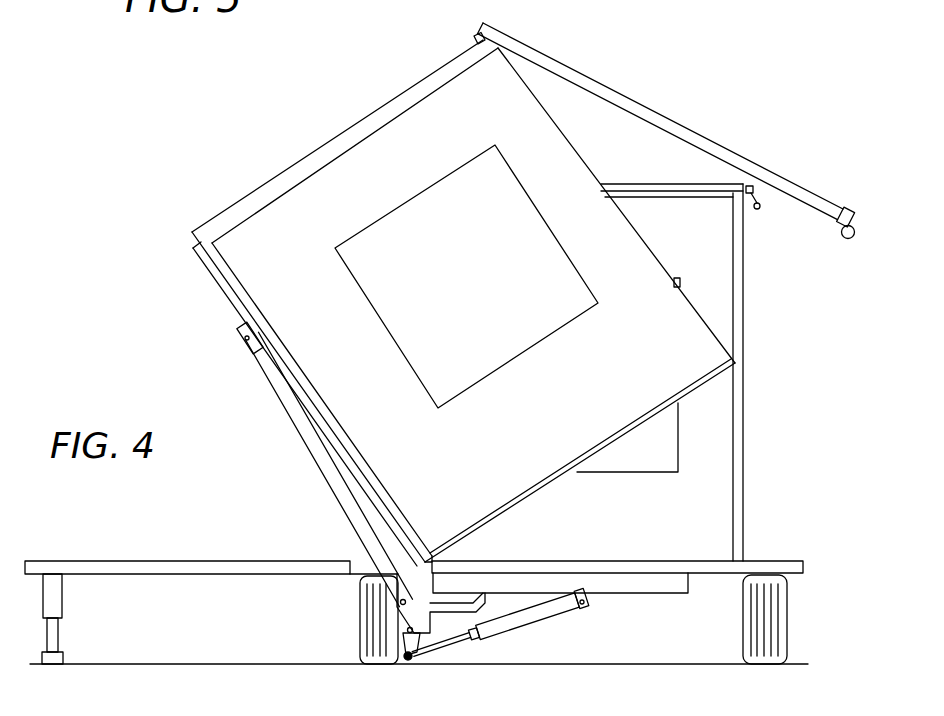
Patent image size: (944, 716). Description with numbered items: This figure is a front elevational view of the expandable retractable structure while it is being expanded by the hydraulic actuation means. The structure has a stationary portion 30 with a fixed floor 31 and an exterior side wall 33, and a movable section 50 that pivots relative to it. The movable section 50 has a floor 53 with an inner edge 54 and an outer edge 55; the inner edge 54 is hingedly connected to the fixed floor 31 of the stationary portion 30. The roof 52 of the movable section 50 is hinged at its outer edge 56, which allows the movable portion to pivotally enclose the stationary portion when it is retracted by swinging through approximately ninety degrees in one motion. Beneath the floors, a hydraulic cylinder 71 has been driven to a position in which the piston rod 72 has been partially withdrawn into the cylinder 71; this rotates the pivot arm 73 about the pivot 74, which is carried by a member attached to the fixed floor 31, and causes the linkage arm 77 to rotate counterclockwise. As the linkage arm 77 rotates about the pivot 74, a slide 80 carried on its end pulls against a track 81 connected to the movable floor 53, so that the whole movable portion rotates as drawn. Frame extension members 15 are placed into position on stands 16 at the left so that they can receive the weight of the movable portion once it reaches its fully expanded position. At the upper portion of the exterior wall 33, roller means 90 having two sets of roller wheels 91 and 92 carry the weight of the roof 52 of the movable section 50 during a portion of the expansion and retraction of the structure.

The frame extension member 15 is at (173, 562).
The stand 16 is at (58, 587).
The stationary portion 30 is at (692, 372).
The fixed floor 31 is at (614, 561).
The exterior side wall 33 is at (743, 290).
The movable section 50 is at (666, 131).
The roof 52 is at (680, 128).
The movable floor 53 is at (333, 415).
The inner edge 54 is at (423, 565).
The outer edge 55 is at (218, 217).
The outer edge 56 is at (478, 33).
The hydraulic cylinder 71 is at (533, 618).
The piston rod 72 is at (443, 647).
The pivot arm 73 is at (403, 650).
The pivot point 74 is at (398, 602).
The linkage arm 77 is at (323, 490).
The slide 80 is at (245, 334).
The track 81 is at (208, 265).
The roller means 90 is at (798, 189).
The roller wheel 91 is at (750, 185).
The roller wheel 92 is at (760, 205).